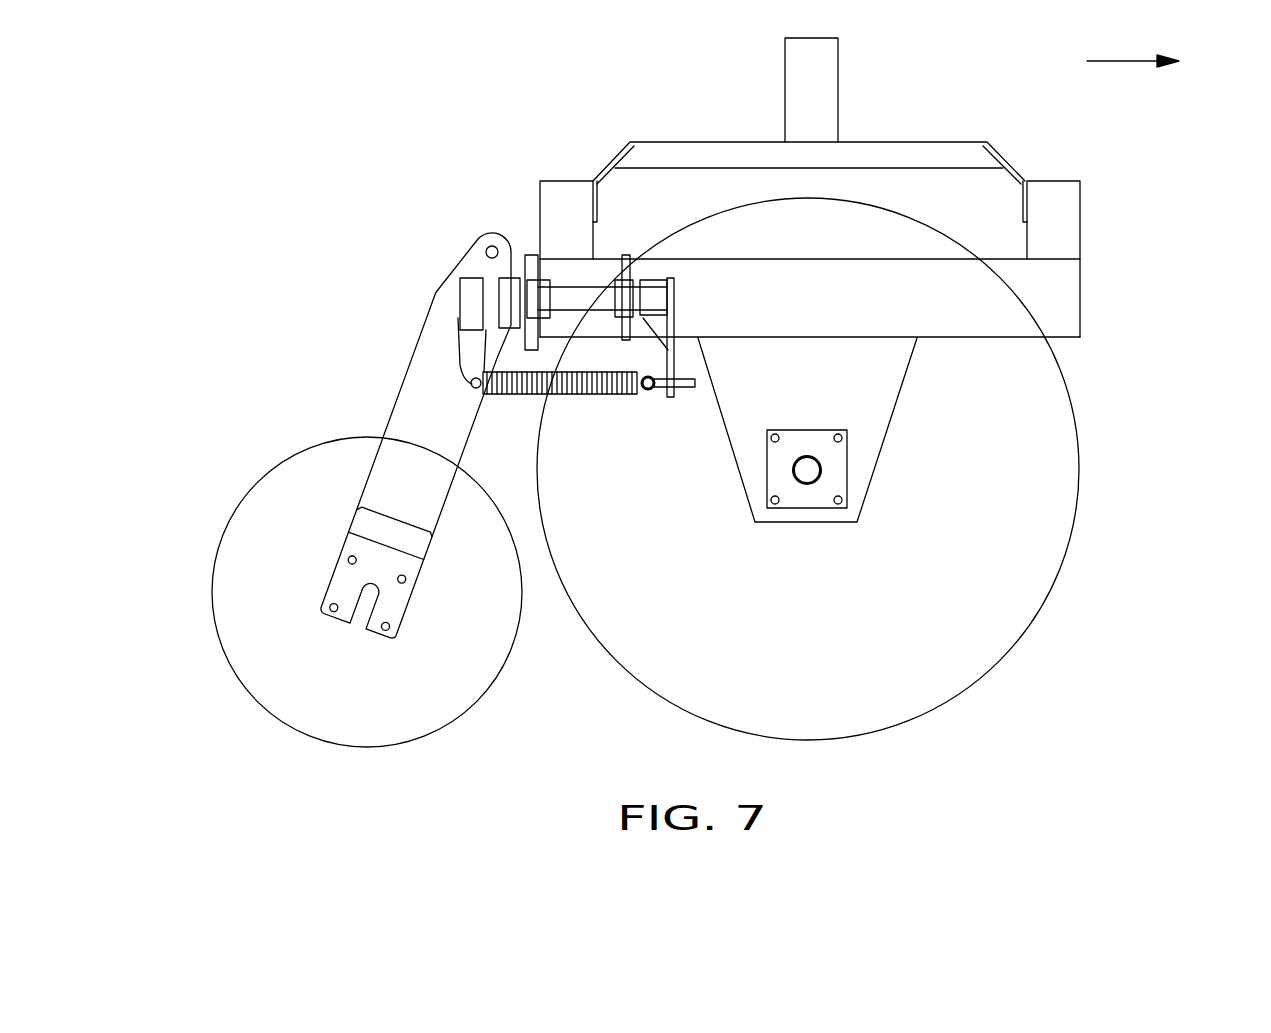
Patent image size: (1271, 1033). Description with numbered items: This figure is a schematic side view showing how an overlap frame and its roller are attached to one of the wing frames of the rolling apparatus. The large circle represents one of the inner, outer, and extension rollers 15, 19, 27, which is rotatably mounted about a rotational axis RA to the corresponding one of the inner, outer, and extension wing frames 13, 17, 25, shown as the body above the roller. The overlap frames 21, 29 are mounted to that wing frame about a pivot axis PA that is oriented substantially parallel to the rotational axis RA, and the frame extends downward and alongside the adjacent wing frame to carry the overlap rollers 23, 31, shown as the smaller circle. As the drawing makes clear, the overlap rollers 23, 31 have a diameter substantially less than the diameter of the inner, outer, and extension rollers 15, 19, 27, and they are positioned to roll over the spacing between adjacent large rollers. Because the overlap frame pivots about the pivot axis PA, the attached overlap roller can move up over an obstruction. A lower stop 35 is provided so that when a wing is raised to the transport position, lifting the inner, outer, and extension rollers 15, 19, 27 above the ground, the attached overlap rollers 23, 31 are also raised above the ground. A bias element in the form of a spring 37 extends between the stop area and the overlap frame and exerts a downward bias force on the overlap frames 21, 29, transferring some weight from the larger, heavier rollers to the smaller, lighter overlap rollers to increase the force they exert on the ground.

The inner wing frame 13 is at (896, 280).
The outer wing frame 17 is at (896, 280).
The extension wing frame 25 is at (1080, 295).
The inner roller 15 is at (874, 469).
The outer roller 19 is at (874, 469).
The extension roller 27 is at (1050, 595).
The overlap frame 21 is at (399, 435).
The extension overlap frame 29 is at (422, 331).
The overlap roller 23 is at (306, 592).
The extension overlap roller 31 is at (222, 546).
The lower stop 35 is at (493, 333).
The spring 37 is at (610, 398).
The pivot axis PA is at (487, 246).
The rotational axis RA is at (804, 475).